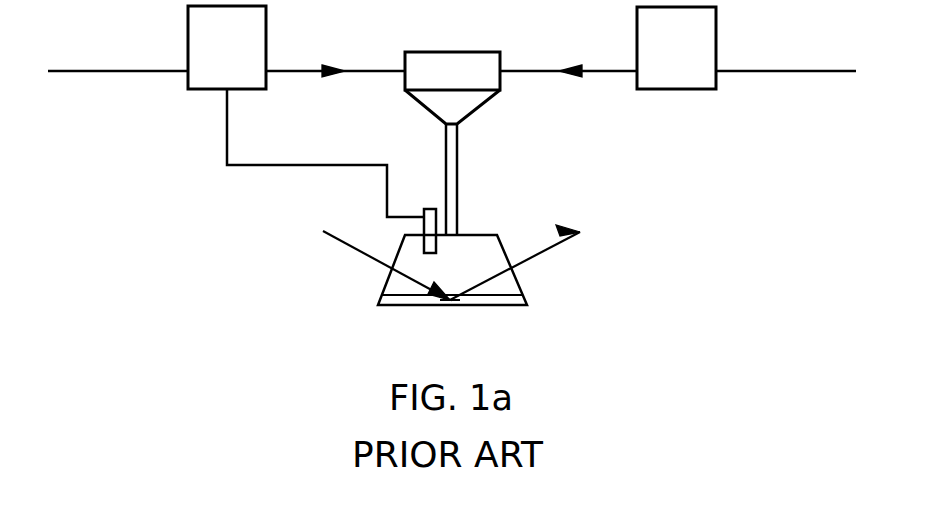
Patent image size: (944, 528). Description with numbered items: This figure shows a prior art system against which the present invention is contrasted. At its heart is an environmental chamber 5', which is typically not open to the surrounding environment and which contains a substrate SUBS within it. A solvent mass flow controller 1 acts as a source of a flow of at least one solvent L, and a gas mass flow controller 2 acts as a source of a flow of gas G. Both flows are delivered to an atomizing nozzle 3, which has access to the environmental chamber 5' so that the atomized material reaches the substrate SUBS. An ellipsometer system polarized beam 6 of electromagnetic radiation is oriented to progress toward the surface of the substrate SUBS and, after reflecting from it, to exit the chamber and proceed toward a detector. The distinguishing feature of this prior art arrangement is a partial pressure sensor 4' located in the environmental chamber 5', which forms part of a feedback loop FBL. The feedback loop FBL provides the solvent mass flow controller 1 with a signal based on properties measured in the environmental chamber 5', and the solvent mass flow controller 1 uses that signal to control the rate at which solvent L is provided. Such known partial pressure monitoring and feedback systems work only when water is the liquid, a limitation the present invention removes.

The solvent mass flow controller 1 is at (236, 79).
The gas mass flow controller 2 is at (684, 81).
The atomizing nozzle 3 is at (429, 82).
The partial pressure sensor 4' is at (419, 191).
The environmental chamber 5' is at (414, 326).
The ellipsometer system polarized beam 6 is at (337, 256).
The feedback loop FBL is at (296, 176).
The substrate SUBS is at (516, 286).
The solvent L is at (118, 55).
The gas G is at (786, 55).